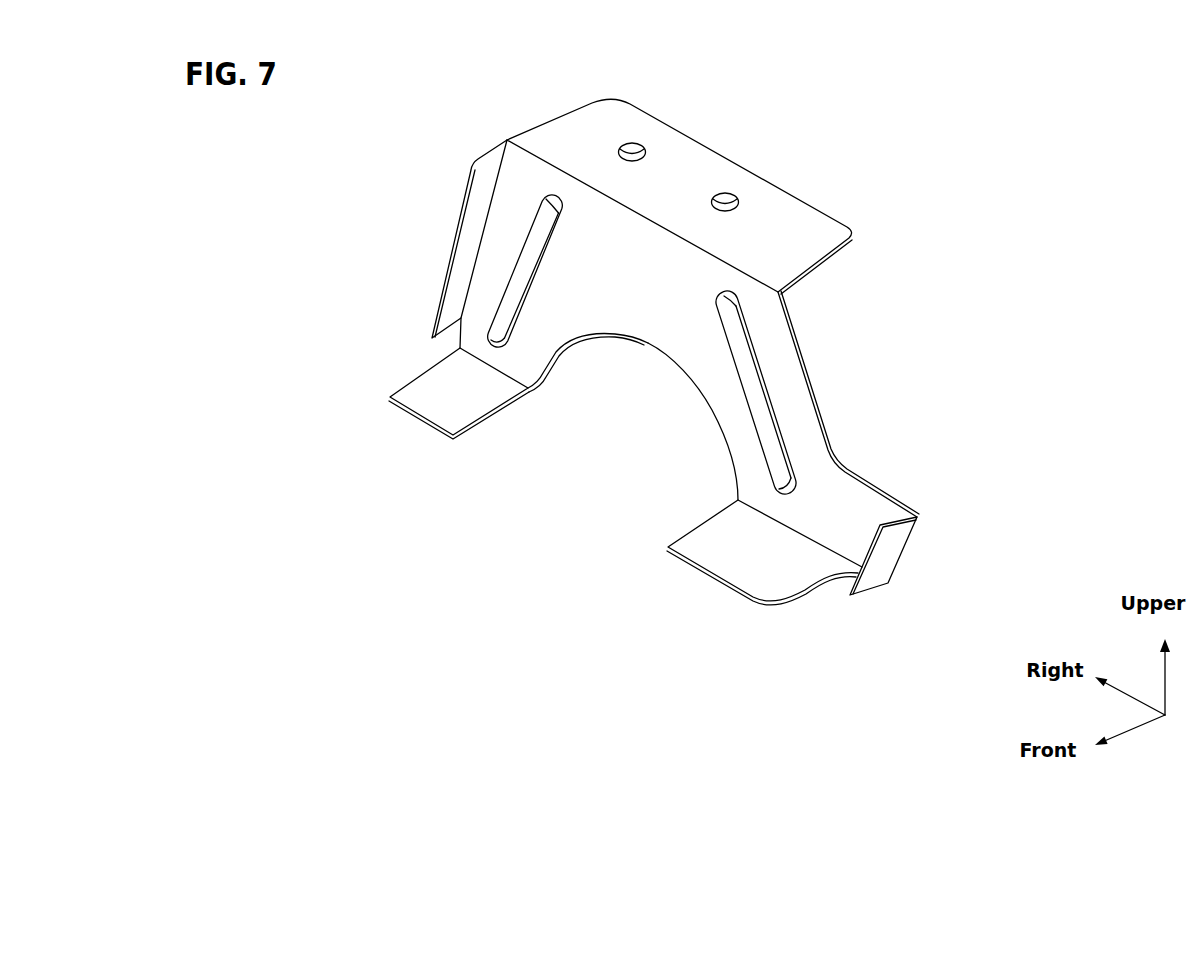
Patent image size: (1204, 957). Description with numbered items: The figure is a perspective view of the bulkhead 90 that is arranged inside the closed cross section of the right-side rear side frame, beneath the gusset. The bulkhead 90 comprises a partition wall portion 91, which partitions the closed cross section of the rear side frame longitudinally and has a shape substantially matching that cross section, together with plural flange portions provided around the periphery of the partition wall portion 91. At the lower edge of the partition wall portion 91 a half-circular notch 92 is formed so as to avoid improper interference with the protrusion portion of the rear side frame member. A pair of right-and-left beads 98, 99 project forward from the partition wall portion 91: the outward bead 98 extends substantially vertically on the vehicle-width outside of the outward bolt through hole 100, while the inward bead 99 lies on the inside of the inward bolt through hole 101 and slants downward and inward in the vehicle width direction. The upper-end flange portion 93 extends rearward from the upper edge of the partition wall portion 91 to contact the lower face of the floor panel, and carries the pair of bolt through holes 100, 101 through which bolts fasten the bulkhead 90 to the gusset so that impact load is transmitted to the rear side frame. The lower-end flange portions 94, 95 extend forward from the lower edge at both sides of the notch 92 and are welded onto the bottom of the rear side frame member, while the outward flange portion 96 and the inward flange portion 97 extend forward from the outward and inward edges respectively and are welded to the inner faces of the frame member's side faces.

The bulkhead 90 is at (711, 346).
The partition wall portion 91 is at (637, 315).
The notch 92 is at (690, 380).
The upper-end flange portion 93 is at (679, 180).
The lower-end flange portion 94 is at (427, 408).
The lower-end flange portion 95 is at (715, 567).
The outward flange portion 96 is at (452, 245).
The inward flange portion 97 is at (887, 557).
The outward bead 98 is at (527, 227).
The inward bead 99 is at (763, 370).
The outward bolt through hole 100 is at (632, 152).
The inward bolt through hole 101 is at (725, 202).